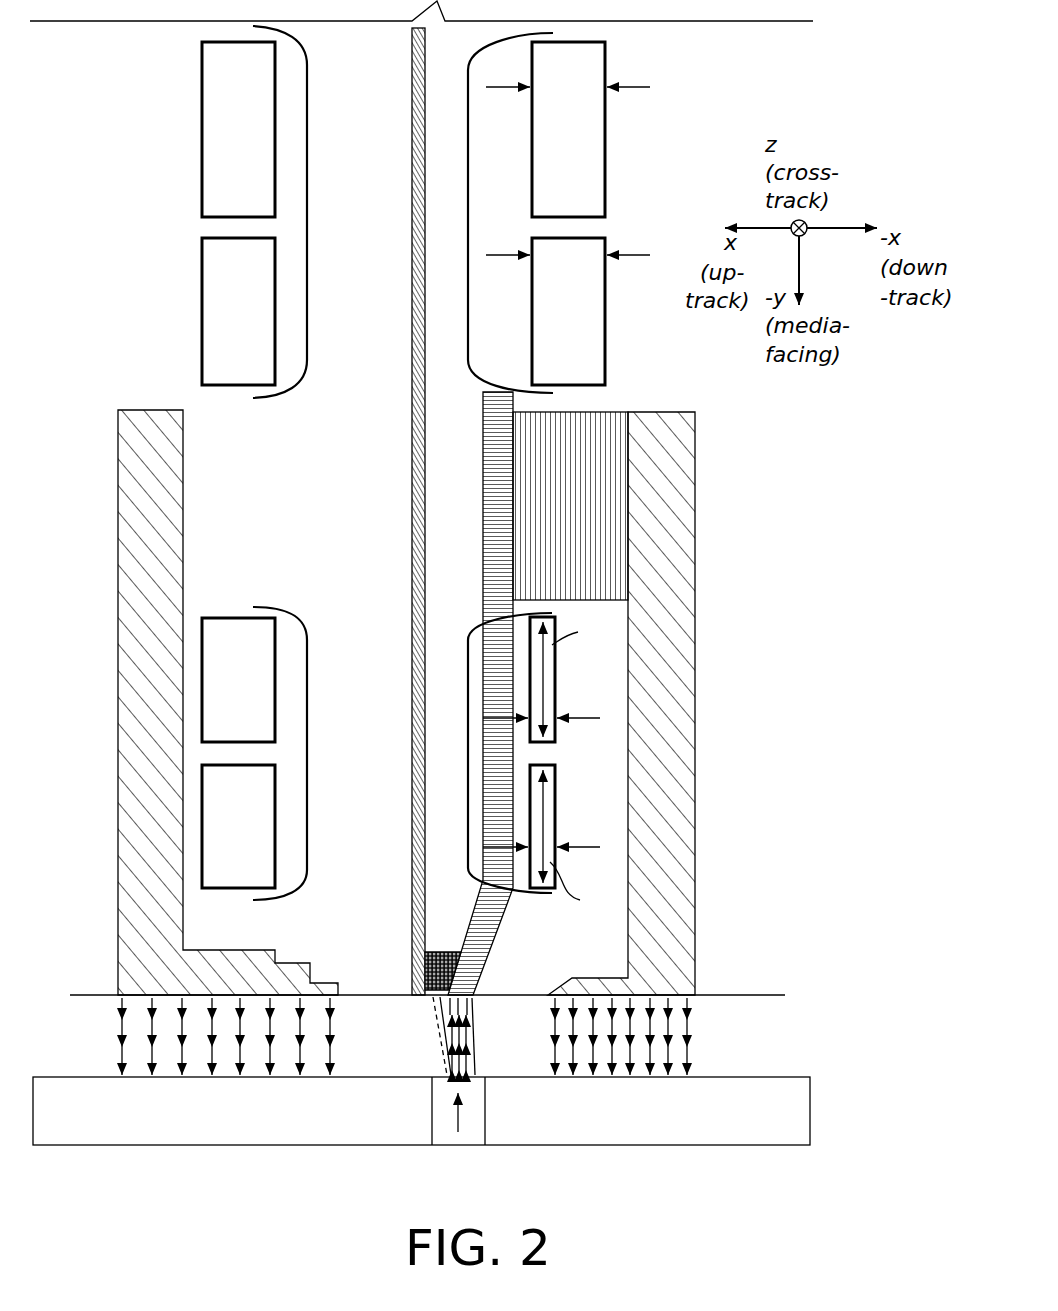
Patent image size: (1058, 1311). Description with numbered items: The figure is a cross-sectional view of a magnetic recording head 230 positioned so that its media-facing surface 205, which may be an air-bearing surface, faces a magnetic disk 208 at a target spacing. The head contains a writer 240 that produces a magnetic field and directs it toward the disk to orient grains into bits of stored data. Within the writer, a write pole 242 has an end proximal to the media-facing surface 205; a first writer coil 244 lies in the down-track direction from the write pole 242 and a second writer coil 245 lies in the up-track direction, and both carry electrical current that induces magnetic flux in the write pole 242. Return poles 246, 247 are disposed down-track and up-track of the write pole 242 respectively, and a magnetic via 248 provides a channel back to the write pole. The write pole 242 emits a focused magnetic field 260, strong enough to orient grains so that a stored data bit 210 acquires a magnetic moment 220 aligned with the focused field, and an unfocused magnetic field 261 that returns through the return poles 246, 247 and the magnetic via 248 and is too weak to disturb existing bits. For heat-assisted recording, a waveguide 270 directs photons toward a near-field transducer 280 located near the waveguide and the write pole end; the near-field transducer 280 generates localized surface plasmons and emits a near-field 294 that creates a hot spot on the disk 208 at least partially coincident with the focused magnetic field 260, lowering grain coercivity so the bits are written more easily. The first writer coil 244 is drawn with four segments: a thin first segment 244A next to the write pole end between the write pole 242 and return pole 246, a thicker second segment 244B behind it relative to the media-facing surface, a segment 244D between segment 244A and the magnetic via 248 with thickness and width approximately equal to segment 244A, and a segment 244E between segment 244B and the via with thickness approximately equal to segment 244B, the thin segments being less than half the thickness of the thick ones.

The magnetic recording head 230 is at (835, 68).
The writer 240 is at (737, 75).
The first writer coil 244 is at (466, 210).
The second segment 244B is at (591, 115).
The segment 244E is at (591, 307).
The segment 244D is at (540, 688).
The first segment 244A is at (540, 820).
The second writer coil 245 is at (310, 210).
The return pole 246 is at (686, 887).
The return pole 247 is at (176, 905).
The magnetic via 248 is at (593, 515).
The write pole 242 is at (495, 945).
The waveguide 270 is at (410, 958).
The near-field transducer 280 is at (445, 952).
The near-field 294 is at (432, 1032).
The focused magnetic field 260 is at (520, 1033).
The unfocused magnetic field 261 is at (115, 1055).
The media-facing surface 205 is at (783, 997).
The magnetic disk 208 is at (116, 1125).
The magnetic moment 220 is at (458, 1125).
The stored data bit 210 is at (460, 1152).